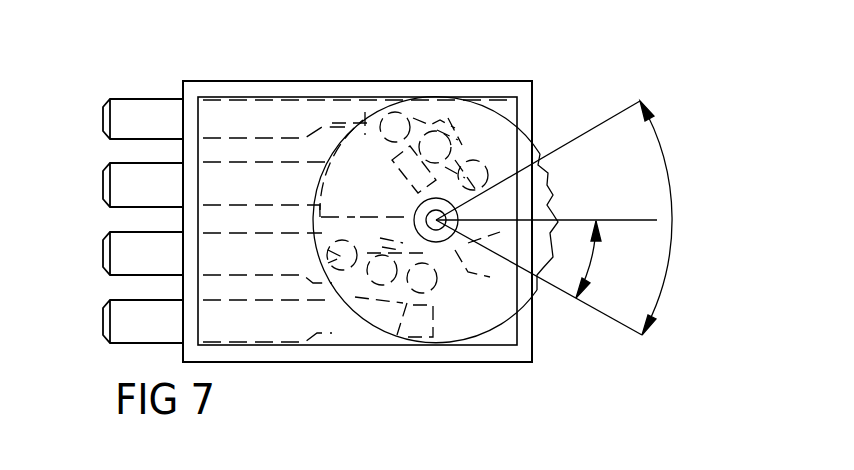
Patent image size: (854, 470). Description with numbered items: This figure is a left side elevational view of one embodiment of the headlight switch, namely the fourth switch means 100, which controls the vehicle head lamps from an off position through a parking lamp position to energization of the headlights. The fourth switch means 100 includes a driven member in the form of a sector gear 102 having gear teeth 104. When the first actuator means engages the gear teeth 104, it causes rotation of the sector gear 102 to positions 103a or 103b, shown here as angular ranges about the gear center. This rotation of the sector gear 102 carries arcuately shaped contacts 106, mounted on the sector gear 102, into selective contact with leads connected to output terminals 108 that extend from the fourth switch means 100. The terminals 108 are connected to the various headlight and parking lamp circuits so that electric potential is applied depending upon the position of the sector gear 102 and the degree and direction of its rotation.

The fourth switch means 100 is at (290, 66).
The sector gear 102 is at (497, 133).
The gear teeth 104 is at (553, 180).
The arcuately shaped contacts 106 is at (358, 137).
The output terminals 108 is at (148, 103).
The rotation position 103a is at (590, 253).
The rotation position 103b is at (663, 163).